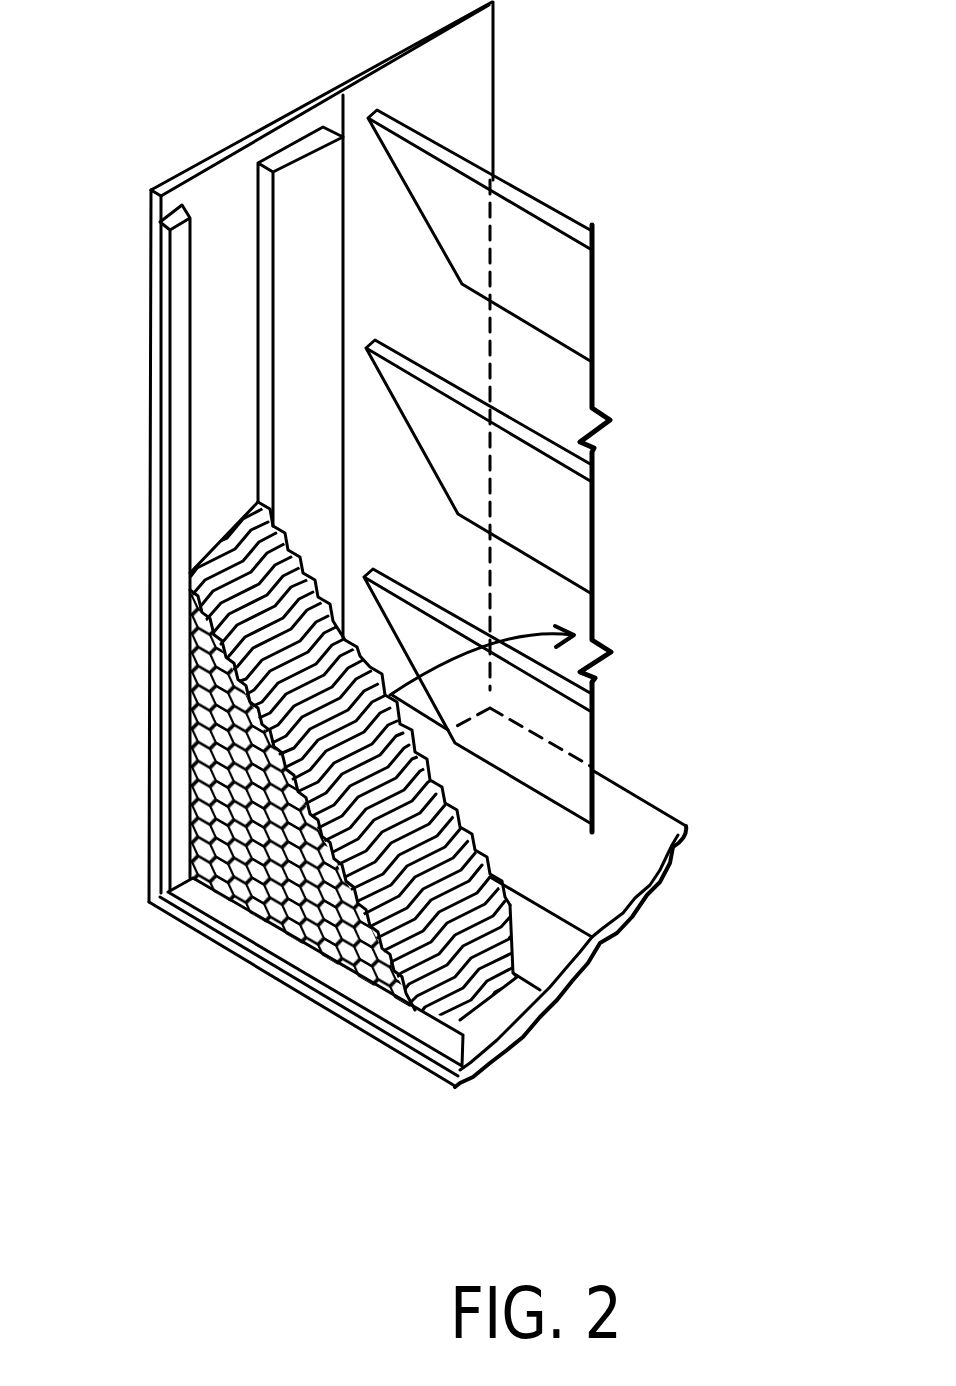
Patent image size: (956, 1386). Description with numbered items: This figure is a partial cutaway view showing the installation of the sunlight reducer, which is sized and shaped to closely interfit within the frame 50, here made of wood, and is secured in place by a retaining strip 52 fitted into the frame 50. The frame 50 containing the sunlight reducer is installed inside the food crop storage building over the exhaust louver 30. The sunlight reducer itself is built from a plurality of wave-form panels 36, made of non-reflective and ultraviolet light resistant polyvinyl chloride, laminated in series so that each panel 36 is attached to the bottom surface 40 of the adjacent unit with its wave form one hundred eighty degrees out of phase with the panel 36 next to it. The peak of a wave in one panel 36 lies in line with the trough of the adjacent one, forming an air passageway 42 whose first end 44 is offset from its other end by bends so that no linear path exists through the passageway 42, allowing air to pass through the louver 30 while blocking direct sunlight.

The exhaust louver 30 is at (580, 180).
The panel 36 is at (475, 855).
The bottom surface 40 is at (430, 1095).
The air passageway 42 is at (261, 795).
The first end 44 is at (150, 488).
The frame 50 is at (213, 157).
The retaining strip 52 is at (403, 1021).